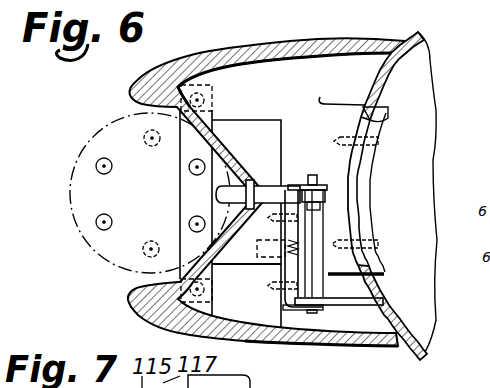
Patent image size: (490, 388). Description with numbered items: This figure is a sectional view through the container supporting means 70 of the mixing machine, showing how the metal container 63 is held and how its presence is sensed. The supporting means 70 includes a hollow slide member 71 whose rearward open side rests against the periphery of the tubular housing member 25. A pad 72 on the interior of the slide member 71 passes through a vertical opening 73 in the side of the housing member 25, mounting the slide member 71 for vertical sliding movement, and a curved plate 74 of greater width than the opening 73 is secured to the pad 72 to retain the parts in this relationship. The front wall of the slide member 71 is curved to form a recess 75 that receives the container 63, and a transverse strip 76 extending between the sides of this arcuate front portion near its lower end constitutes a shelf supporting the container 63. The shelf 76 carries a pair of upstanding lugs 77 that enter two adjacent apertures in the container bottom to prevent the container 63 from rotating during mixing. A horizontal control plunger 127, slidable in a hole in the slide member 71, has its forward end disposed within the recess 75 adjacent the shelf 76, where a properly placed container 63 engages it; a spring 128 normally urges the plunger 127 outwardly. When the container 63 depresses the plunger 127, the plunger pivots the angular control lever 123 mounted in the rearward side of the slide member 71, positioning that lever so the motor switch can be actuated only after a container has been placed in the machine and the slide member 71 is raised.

The supporting means 70 is at (246, 38).
The slide member 71 is at (173, 327).
The pad 72 is at (362, 193).
The vertical opening 73 is at (380, 129).
The curved plate 74 is at (370, 227).
The recess 75 is at (234, 136).
The transverse strip 76 is at (187, 152).
The upstanding lugs 77 is at (196, 222).
The metal container 63 is at (72, 208).
The horizontal control plunger 127 is at (274, 182).
The spring 128 is at (272, 289).
The angular control lever 123 is at (350, 305).
The tubular housing member 25 is at (407, 353).